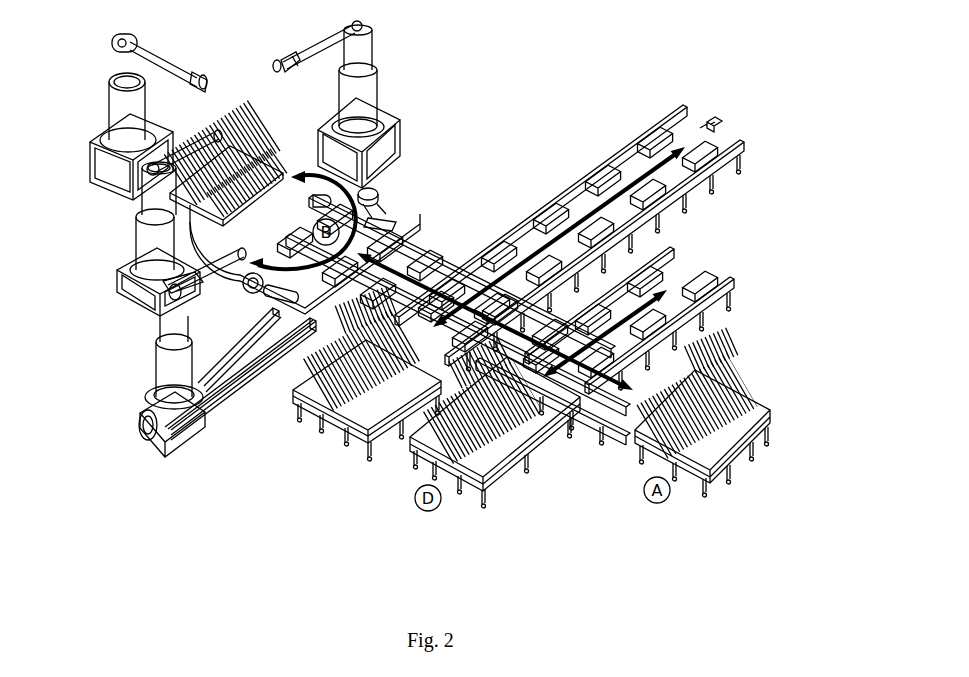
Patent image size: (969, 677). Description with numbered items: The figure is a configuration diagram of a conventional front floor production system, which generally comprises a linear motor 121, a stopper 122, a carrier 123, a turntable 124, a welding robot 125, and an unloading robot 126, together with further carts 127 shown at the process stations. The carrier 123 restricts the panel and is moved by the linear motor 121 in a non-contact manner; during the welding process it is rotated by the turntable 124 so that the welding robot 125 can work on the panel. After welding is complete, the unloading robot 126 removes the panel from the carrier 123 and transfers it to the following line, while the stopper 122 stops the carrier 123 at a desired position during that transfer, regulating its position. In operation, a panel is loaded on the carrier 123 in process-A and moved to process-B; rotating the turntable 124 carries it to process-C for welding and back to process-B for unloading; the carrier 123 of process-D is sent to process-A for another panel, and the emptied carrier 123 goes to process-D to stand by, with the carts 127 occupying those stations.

The linear motor 121 is at (636, 150).
The stopper 122 is at (722, 118).
The carrier 123 is at (763, 356).
The turntable 124 is at (395, 188).
The welding robot 125 is at (398, 70).
The unloading robot 126 is at (132, 371).
The jig cart 127 is at (326, 440).